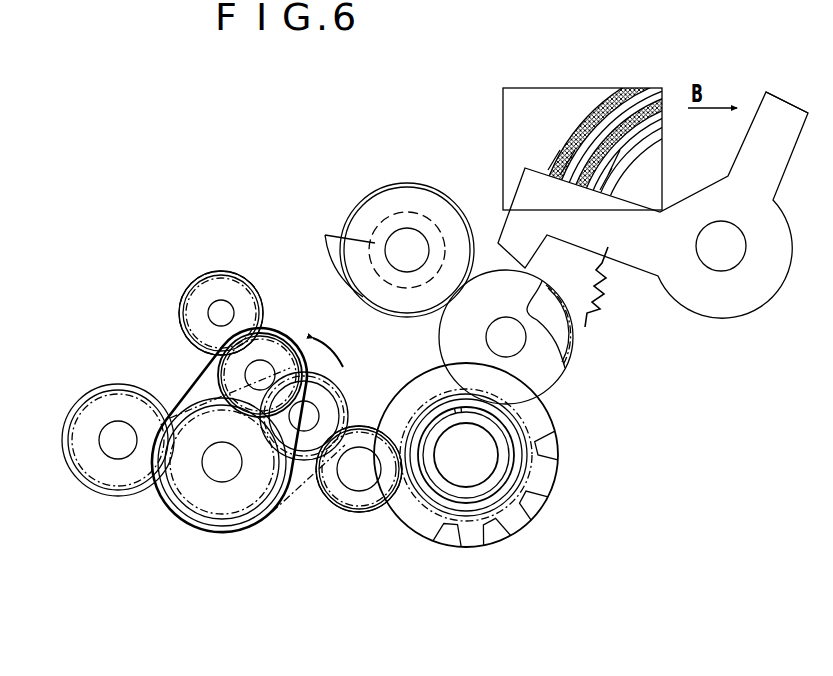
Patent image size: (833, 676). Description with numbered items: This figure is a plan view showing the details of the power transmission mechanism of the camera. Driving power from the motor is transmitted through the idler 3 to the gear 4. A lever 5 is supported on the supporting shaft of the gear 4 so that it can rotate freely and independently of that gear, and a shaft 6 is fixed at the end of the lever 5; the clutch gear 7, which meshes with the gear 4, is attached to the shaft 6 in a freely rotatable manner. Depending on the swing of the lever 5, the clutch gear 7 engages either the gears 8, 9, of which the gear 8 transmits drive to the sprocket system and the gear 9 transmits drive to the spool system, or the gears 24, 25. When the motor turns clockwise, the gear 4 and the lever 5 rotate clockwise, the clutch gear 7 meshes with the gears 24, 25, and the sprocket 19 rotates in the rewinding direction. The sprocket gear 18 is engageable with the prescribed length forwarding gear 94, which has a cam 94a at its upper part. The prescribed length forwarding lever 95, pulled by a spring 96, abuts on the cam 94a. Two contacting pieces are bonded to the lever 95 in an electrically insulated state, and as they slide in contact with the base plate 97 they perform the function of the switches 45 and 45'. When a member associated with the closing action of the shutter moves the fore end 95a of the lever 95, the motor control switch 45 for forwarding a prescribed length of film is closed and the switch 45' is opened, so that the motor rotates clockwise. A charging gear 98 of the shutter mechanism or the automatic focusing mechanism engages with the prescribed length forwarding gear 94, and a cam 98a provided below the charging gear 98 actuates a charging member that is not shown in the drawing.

The idler 3 is at (123, 482).
The gear 4 is at (202, 502).
The lever 5 is at (260, 522).
The shaft 6 is at (263, 361).
The clutch gear 7 is at (285, 352).
The gear 8 is at (205, 270).
The gear 9 is at (221, 313).
The sprocket gear 18 is at (443, 497).
The sprocket 19 is at (468, 532).
The gear 24 is at (348, 500).
The gear 25 is at (359, 469).
The motor control switch 45 is at (686, 146).
The switch 45' is at (613, 121).
The prescribed length forwarding gear 94 is at (565, 335).
The cam 94a is at (548, 375).
The prescribed length forwarding lever 95 is at (777, 227).
The fore end 95a is at (782, 108).
The spring 96 is at (608, 287).
The base plate 97 is at (535, 98).
The charging gear 98 is at (393, 192).
The cam 98a is at (332, 237).